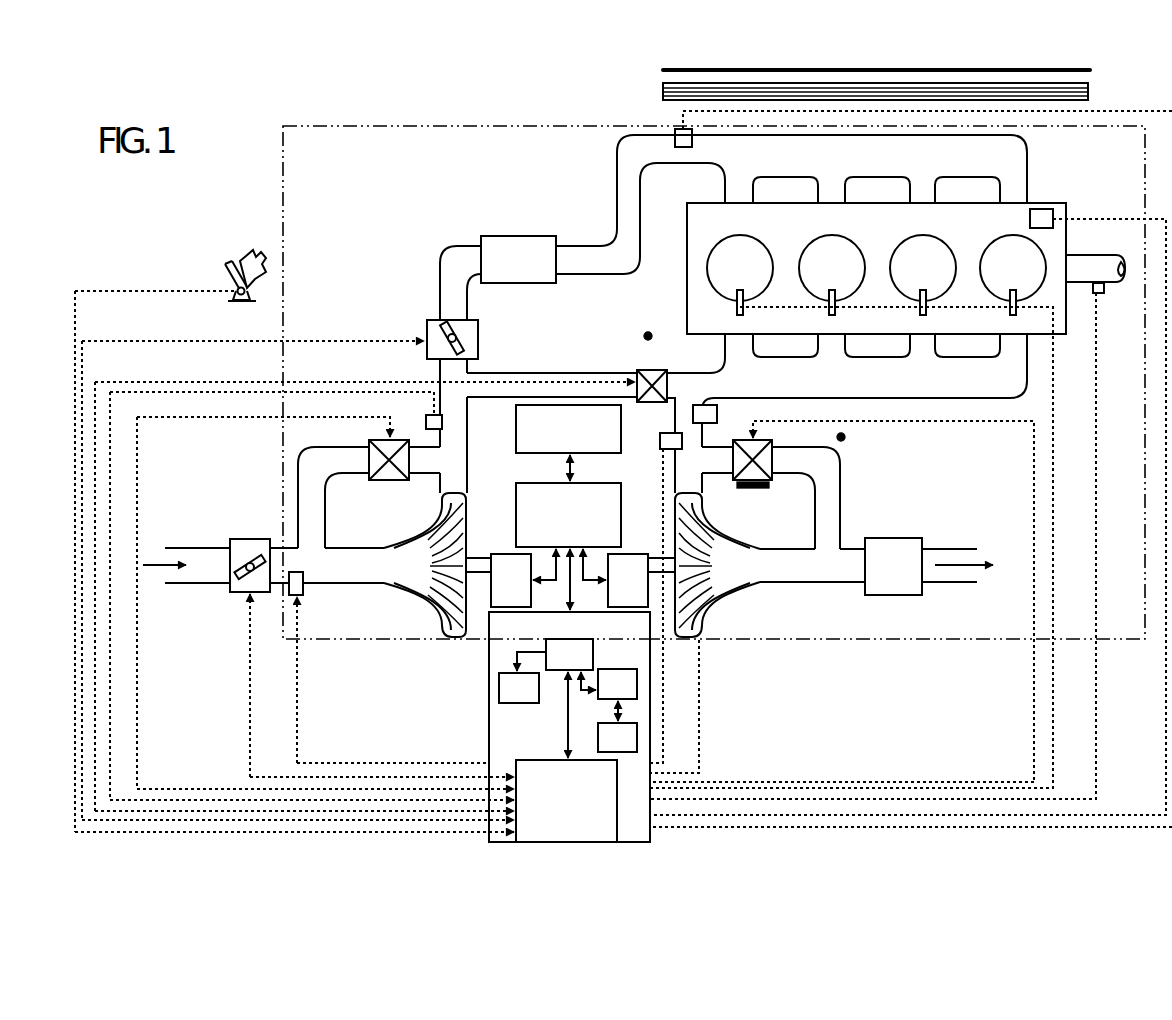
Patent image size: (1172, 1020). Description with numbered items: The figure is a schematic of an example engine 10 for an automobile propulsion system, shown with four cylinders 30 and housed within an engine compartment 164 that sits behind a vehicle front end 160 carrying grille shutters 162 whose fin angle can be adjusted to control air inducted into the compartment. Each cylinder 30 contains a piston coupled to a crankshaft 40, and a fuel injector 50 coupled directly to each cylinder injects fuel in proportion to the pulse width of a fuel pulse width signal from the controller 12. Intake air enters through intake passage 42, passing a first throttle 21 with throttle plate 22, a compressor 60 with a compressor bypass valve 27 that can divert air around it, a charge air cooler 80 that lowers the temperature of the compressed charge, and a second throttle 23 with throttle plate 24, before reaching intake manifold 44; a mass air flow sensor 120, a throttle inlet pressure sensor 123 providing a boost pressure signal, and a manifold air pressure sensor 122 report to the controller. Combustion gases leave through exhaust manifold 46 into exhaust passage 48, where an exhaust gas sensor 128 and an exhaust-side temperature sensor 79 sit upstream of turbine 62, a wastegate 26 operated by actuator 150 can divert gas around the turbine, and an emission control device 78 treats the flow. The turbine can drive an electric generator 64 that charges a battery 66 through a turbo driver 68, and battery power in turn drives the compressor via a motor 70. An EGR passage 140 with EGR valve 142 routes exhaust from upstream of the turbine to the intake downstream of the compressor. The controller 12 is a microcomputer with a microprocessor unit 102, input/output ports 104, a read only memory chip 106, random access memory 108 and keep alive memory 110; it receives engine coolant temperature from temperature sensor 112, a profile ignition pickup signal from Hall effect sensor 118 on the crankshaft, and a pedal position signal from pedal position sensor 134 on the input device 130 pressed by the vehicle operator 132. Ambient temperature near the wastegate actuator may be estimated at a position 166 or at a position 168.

The engine 10 is at (876, 268).
The controller 12 is at (539, 727).
The throttle 21 is at (241, 539).
The throttle plate 22 is at (243, 582).
The throttle 23 is at (428, 320).
The throttle plate 24 is at (478, 341).
The wastegate 26 is at (773, 447).
The compressor bypass valve 27 is at (369, 446).
The cylinder 30 is at (876, 268).
The crankshaft 40 is at (1104, 258).
The intake passage 42 is at (263, 565).
The intake manifold 44 is at (791, 204).
The exhaust manifold 46 is at (847, 413).
The exhaust passage 48 is at (812, 565).
The fuel injector 50 is at (737, 313).
The compressor 60 is at (420, 616).
The turbine 62 is at (722, 520).
The electric generator 64 is at (615, 578).
The battery 66 is at (516, 438).
The turbo driver 68 is at (600, 483).
The motor 70 is at (523, 578).
The emission control device 78 is at (929, 566).
The exhaust-side temperature sensor 79 is at (661, 441).
The charge air cooler 80 is at (490, 236).
The microprocessor unit 102 is at (544, 650).
The input/output ports 104 is at (566, 801).
The read only memory chip 106 is at (499, 691).
The random access memory 108 is at (606, 669).
The keep alive memory 110 is at (600, 730).
The temperature sensor 112 is at (1045, 209).
The Hall effect sensor 118 is at (1099, 294).
The mass air flow sensor 120 is at (303, 592).
The manifold air pressure sensor 122 is at (677, 131).
The throttle inlet pressure sensor 123 is at (428, 417).
The exhaust gas sensor 128 is at (717, 414).
The input device 130 is at (228, 268).
The vehicle operator 132 is at (266, 262).
The pedal position sensor 134 is at (250, 291).
The EGR passage 140 is at (553, 374).
The EGR valve 142 is at (657, 370).
The actuator 150 is at (769, 488).
The vehicle front end 160 is at (663, 70).
The grille shutters 162 is at (663, 92).
The engine compartment 164 is at (467, 126).
The position 166 is at (644, 335).
The position 168 is at (845, 439).